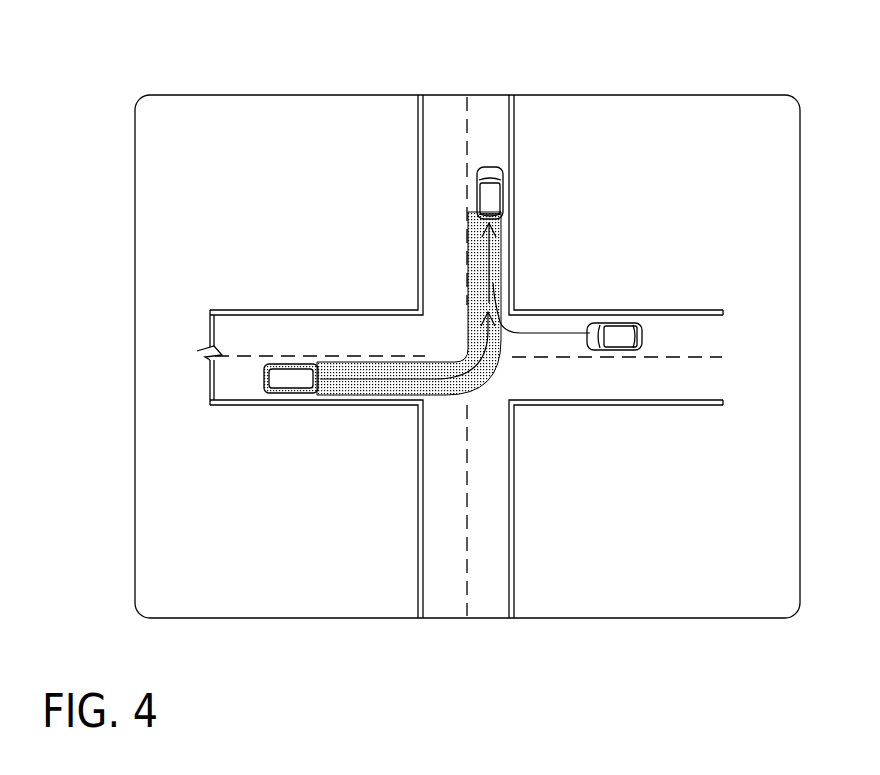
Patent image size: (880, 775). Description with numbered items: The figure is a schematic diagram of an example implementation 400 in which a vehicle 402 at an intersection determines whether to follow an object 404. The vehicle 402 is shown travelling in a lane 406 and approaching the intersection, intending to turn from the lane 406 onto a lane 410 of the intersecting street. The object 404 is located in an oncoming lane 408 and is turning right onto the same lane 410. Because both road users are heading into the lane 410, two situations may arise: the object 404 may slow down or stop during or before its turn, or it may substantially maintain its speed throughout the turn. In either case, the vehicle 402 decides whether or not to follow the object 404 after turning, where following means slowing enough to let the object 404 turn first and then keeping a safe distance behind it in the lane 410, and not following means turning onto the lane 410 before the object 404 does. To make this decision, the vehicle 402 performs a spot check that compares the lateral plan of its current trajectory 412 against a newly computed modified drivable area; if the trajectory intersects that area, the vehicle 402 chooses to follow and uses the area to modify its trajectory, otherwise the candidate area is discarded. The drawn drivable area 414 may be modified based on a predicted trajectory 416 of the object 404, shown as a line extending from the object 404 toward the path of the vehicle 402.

The example implementation 400 is at (120, 202).
The vehicle 402 is at (288, 365).
The object 404 is at (500, 190).
The lane 406 is at (257, 394).
The oncoming lane 408 is at (728, 344).
The lane 410 is at (508, 147).
The trajectory 412 is at (407, 380).
The drivable area 414 is at (460, 343).
The predicted trajectory 416 is at (493, 283).